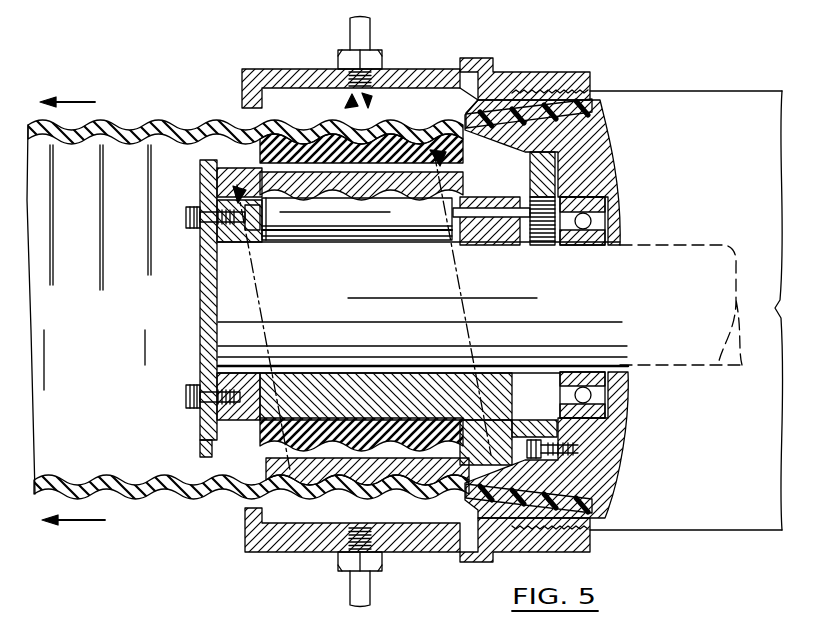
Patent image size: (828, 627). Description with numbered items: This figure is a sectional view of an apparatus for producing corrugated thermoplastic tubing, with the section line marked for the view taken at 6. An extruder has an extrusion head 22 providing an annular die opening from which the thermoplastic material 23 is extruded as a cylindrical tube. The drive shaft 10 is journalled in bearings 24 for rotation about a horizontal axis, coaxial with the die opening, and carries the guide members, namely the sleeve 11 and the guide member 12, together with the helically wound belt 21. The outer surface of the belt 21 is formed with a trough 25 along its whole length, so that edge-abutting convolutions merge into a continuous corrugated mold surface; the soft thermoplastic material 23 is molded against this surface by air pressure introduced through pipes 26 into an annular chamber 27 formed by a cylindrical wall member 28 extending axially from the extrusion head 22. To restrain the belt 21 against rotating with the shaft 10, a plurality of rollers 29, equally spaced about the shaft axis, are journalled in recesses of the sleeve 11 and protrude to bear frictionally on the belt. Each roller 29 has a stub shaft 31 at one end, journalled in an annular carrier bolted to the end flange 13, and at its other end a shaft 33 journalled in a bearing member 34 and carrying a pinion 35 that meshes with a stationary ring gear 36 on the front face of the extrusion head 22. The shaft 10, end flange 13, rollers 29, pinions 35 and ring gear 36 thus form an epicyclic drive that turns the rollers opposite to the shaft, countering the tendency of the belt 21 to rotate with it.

The drive shaft 10 is at (602, 292).
The sleeve 11 is at (435, 383).
The guide member 12 is at (264, 458).
The end flange 13 is at (200, 306).
The belt 21 is at (385, 140).
The extrusion head 22 is at (647, 90).
The thermoplastic material 23 is at (125, 130).
The bearings 24 is at (605, 383).
The trough 25 is at (250, 178).
The pipes 26 is at (358, 35).
The annular chamber 27 is at (417, 95).
The cylindrical wall member 28 is at (262, 68).
The rollers 29 is at (328, 220).
The stub shaft 31 is at (255, 240).
The shaft 33 is at (507, 215).
The bearing member 34 is at (482, 235).
The pinion 35 is at (538, 237).
The ring gear 36 is at (547, 168).
The section line 6- 6 is at (288, 116).